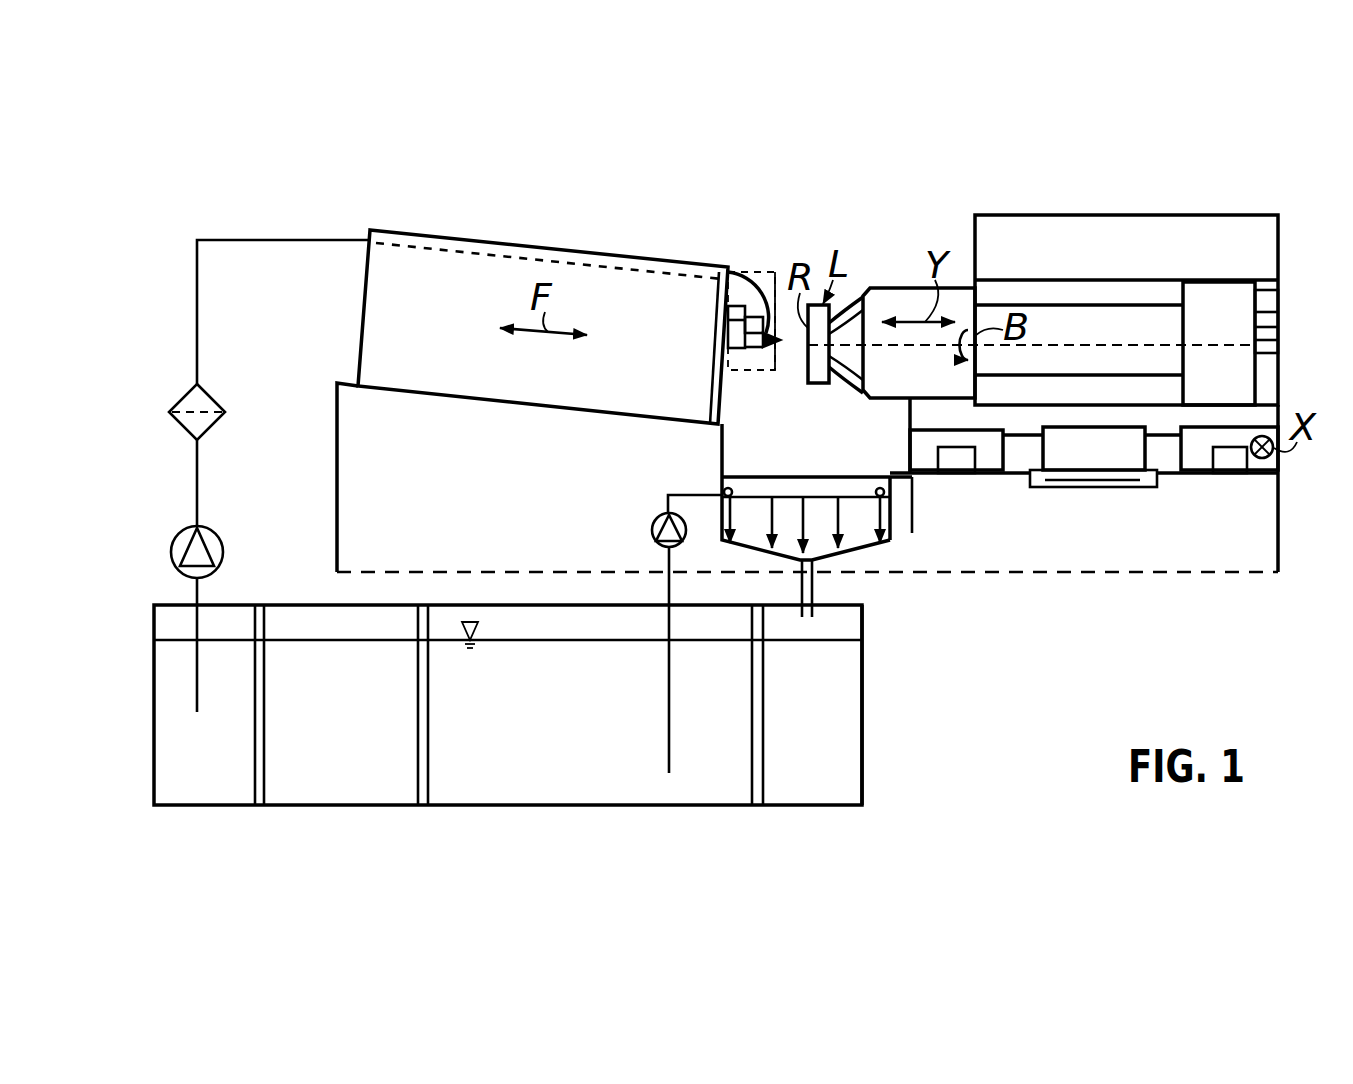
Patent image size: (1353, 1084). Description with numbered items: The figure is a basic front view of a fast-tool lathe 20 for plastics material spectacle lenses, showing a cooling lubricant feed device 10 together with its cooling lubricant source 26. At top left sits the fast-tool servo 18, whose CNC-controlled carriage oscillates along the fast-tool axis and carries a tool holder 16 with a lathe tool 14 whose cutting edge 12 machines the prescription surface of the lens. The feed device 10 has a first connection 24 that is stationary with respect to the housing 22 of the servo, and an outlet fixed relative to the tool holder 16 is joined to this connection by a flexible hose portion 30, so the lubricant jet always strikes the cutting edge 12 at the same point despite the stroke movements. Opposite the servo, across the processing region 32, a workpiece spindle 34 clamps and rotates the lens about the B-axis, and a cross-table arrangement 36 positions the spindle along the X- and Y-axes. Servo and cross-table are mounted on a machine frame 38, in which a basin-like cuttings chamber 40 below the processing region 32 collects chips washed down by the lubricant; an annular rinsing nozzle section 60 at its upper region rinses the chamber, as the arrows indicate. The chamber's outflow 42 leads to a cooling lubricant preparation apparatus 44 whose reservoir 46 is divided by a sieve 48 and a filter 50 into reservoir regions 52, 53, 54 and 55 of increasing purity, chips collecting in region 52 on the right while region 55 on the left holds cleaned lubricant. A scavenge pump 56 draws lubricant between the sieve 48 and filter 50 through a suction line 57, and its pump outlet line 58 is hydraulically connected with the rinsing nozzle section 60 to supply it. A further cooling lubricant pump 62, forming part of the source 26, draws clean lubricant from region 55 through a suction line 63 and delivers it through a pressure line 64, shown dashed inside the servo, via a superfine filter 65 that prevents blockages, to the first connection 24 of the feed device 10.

The cooling lubricant feed device 10 is at (757, 266).
The cutting edge 12 is at (778, 350).
The lathe tool 14 is at (766, 358).
The tool holder 16 is at (776, 276).
The fast-tool servo 18 is at (383, 318).
The fast-tool lathe 20 is at (1122, 208).
The housing 22 is at (672, 333).
The first connection 24 is at (740, 272).
The cooling lubricant source 26 is at (152, 586).
The flexible hose portion 30 is at (738, 296).
The processing region 32 is at (842, 426).
The workpiece spindle 34 is at (938, 383).
The cross-table arrangement 36 is at (1254, 413).
The machine frame 38 is at (437, 493).
The cuttings chamber 40 is at (862, 535).
The outflow 42 is at (813, 585).
The cooling lubricant preparation apparatus 44 is at (876, 730).
The reservoir 46 is at (864, 752).
The sieve 48 is at (758, 802).
The filter 50 is at (422, 758).
The reservoir region 52 is at (827, 711).
The reservoir region 53 is at (567, 718).
The reservoir region 54 is at (347, 718).
The reservoir region 55 is at (247, 718).
The scavenge pump 56 is at (652, 521).
The suction line 57 is at (668, 684).
The supply line 58 is at (700, 494).
The annular rinsing nozzle section 60 is at (822, 492).
The cooling lubricant pump 62 is at (224, 546).
The suction line 63 is at (197, 657).
The pressure line 64 is at (197, 312).
The superfine filter 65 is at (214, 401).